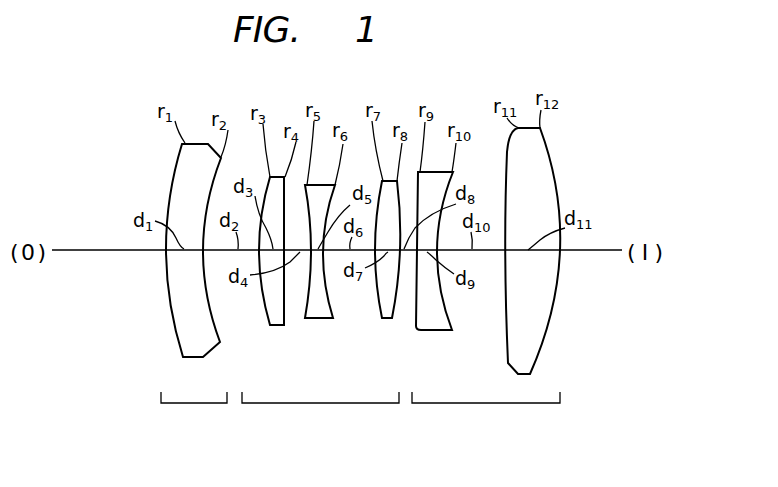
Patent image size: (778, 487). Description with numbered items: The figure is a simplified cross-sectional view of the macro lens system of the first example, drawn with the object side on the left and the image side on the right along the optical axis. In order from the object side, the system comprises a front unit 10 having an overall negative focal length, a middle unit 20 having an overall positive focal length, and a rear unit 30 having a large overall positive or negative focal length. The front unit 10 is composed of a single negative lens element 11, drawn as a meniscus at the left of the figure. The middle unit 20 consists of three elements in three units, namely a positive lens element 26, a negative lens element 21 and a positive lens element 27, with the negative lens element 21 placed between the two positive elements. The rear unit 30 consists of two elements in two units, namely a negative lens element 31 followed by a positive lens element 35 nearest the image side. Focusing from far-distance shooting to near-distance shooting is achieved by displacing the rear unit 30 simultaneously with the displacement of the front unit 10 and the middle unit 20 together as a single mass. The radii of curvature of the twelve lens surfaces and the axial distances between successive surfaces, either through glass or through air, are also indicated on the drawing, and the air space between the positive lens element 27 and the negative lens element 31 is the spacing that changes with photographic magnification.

The front unit 10 is at (176, 424).
The negative lens element 11 is at (201, 357).
The middle unit 20 is at (320, 424).
The negative lens element 21 is at (318, 318).
The positive lens element 26 is at (277, 325).
The positive lens element 27 is at (386, 318).
The rear unit 30 is at (486, 424).
The negative lens element 31 is at (436, 330).
The positive lens element 35 is at (532, 374).